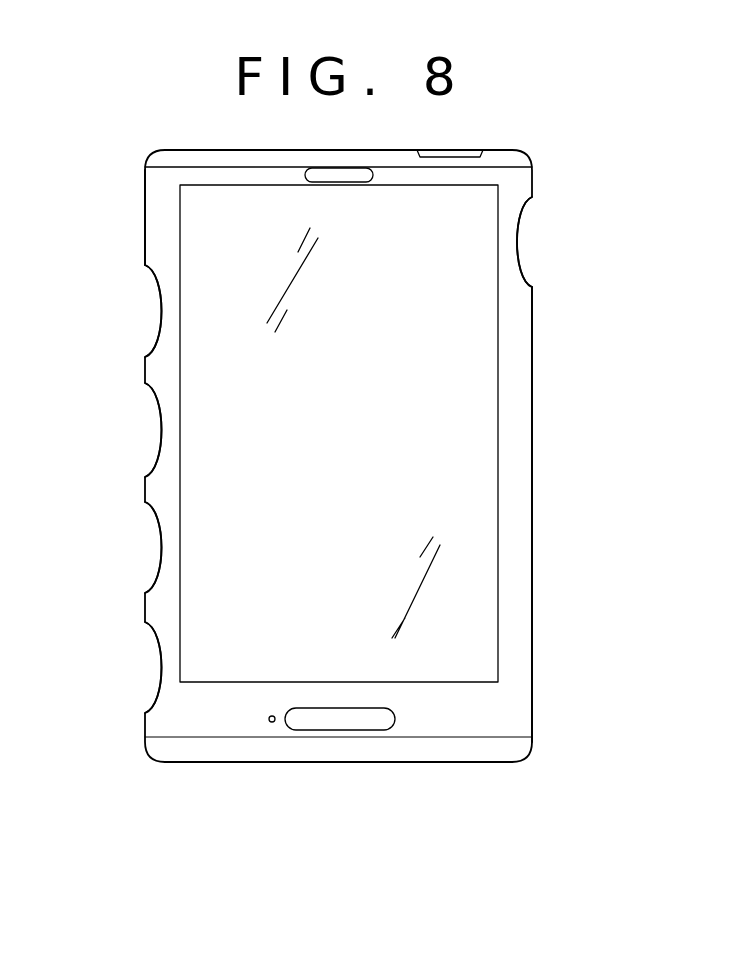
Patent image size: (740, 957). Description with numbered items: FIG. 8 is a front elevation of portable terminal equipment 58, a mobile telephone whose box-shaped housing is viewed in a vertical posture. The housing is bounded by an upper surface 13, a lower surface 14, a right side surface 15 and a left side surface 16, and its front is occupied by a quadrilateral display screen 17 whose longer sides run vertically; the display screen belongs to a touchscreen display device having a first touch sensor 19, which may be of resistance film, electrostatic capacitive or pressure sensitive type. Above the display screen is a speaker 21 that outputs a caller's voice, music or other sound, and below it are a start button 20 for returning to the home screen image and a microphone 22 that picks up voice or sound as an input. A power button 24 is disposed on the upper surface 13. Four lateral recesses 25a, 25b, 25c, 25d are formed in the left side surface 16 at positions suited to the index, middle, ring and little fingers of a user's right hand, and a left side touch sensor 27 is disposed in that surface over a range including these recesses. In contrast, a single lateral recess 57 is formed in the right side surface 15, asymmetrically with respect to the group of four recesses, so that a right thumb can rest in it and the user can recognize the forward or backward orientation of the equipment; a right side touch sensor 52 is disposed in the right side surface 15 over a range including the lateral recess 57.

The portable terminal equipment 58 is at (130, 199).
The upper surface 13 is at (222, 150).
The lower surface 14 is at (407, 763).
The right side surface 15 is at (533, 473).
The left side surface 16 is at (145, 223).
The left side touch sensor 27 is at (157, 255).
The right side touch sensor 52 is at (520, 388).
The lateral recess 57 is at (517, 247).
The display screen 17 is at (354, 507).
The first touch sensor 19 is at (470, 582).
The speaker 21 is at (352, 180).
The power button 24 is at (462, 150).
The start button 20 is at (340, 720).
The microphone 22 is at (272, 723).
The lateral recess 25a is at (160, 337).
The lateral recess 25b is at (160, 452).
The lateral recess 25c is at (160, 567).
The lateral recess 25d is at (160, 684).